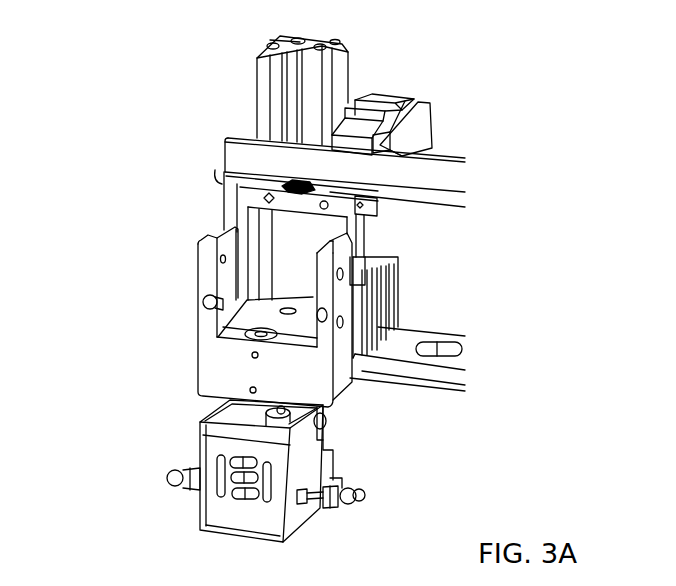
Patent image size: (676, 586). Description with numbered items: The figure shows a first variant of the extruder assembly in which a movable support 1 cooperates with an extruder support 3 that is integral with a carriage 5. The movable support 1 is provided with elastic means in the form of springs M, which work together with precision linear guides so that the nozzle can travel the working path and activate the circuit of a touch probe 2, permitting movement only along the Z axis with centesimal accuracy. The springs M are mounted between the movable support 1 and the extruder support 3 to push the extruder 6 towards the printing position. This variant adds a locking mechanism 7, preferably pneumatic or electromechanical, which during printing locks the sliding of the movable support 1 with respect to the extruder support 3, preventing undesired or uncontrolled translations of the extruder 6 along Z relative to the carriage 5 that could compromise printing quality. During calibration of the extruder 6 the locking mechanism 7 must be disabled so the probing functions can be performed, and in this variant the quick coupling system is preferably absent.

The movable support 1 is at (213, 223).
The touch probe 2 is at (380, 108).
The extruder support 3 is at (197, 355).
The carriage 5 is at (390, 350).
The extruder 6 is at (379, 242).
The locking mechanism 7 is at (277, 88).
The springs M is at (300, 187).